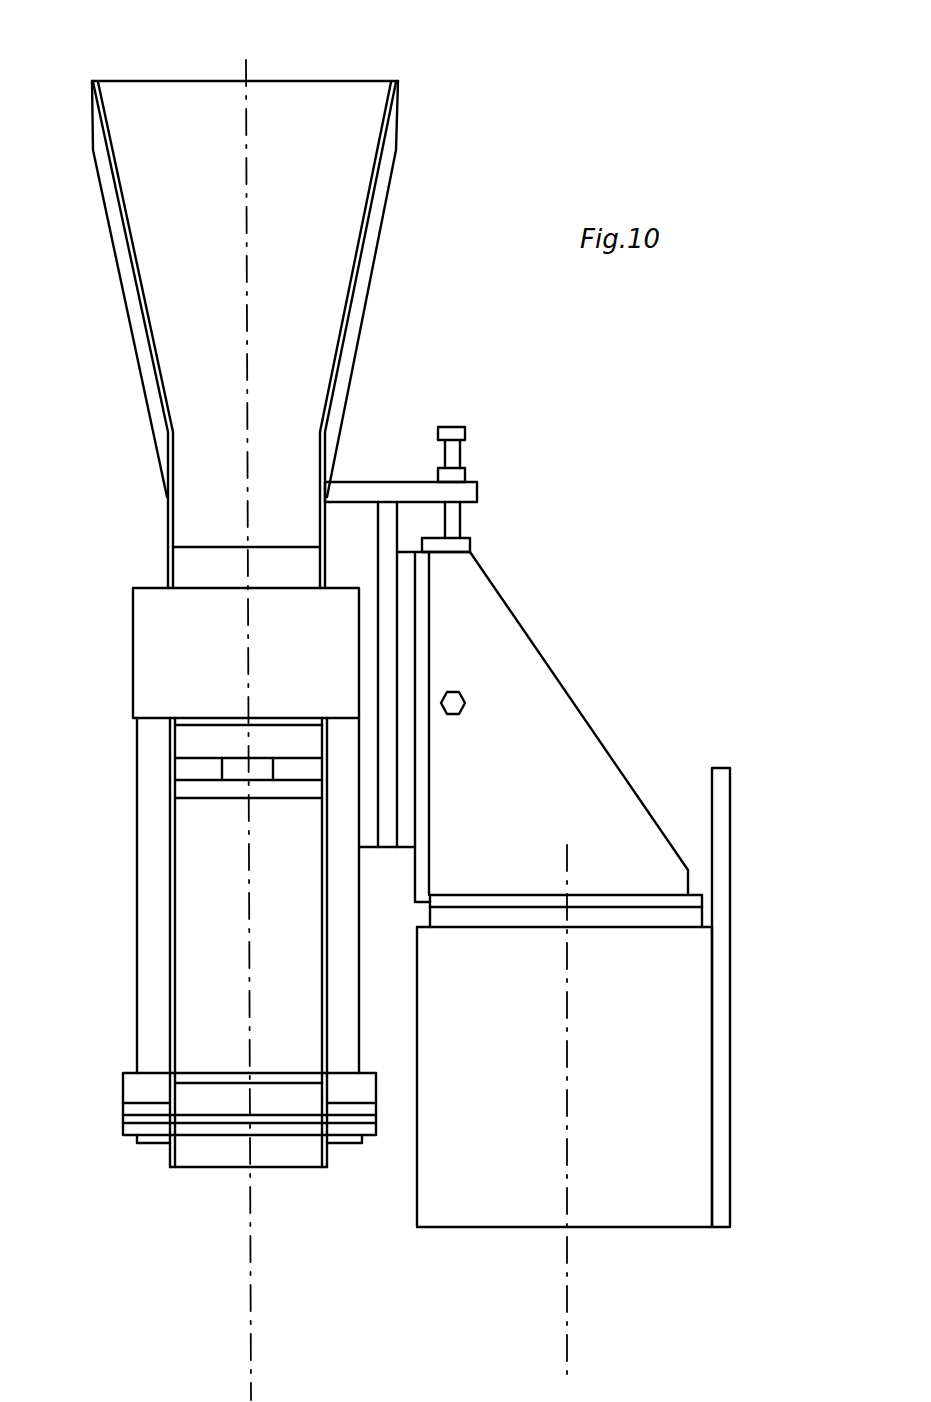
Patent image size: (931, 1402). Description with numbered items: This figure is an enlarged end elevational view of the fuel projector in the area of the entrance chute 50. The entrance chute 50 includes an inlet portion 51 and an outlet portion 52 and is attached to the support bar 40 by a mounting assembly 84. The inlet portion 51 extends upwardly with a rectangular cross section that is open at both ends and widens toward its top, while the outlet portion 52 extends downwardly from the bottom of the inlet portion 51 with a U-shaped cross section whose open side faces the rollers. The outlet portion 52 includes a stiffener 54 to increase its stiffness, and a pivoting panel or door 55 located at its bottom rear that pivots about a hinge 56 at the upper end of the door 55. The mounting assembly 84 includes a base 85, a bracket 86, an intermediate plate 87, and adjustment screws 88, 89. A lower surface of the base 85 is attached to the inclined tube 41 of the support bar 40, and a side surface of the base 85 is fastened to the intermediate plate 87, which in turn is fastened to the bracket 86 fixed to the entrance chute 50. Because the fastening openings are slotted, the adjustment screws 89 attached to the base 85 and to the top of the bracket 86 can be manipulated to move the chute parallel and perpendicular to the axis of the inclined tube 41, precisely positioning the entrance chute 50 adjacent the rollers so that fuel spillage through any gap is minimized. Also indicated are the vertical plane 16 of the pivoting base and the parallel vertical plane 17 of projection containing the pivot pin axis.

The vertical plane 16 is at (568, 1327).
The vertical plane of projection 17 is at (251, 1333).
The support bar 40 is at (713, 1073).
The inclined tube 41 is at (713, 987).
The entrance chute 50 is at (190, 80).
The inlet portion 51 is at (152, 420).
The outlet portion 52 is at (172, 940).
The stiffener 54 is at (138, 852).
The pivoting panel or door 55 is at (193, 1002).
The hinge 56 is at (197, 760).
The mounting assembly 84 is at (588, 722).
The base 85 is at (470, 543).
The bracket 86 is at (363, 482).
The intermediate plate 87 is at (407, 548).
The adjustment screw 88 is at (455, 427).
The adjustment screws 89 is at (462, 694).